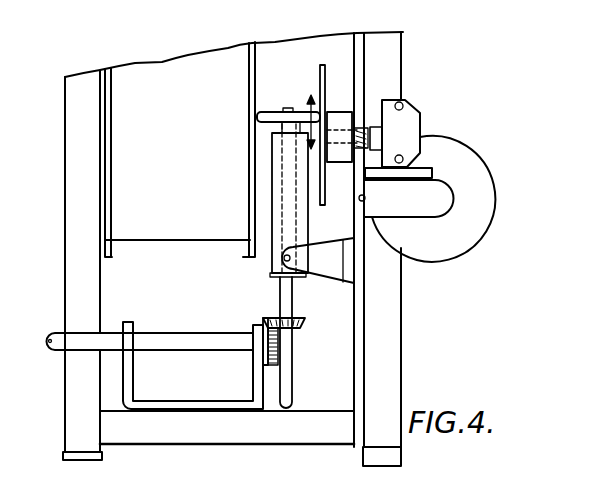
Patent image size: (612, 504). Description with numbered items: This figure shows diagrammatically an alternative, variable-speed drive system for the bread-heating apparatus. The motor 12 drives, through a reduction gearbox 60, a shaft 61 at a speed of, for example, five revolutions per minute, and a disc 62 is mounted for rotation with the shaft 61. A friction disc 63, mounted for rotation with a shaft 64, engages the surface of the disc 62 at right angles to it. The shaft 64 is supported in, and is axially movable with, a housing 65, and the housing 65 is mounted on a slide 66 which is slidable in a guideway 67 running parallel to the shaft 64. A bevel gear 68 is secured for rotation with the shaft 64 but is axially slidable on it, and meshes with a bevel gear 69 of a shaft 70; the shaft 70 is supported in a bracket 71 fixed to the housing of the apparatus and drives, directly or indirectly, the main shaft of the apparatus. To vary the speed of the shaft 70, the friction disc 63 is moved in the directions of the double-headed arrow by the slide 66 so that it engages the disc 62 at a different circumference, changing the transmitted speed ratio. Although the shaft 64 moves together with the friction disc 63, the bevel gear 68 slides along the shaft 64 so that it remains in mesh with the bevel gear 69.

The motor 12 is at (448, 152).
The reduction gearbox 60 is at (407, 128).
The shaft 61 is at (367, 128).
The disc 62 is at (321, 86).
The friction disc 63 is at (257, 116).
The shaft 64 is at (292, 300).
The housing 65 is at (272, 180).
The slide 66 is at (330, 267).
The guideway 67 is at (360, 267).
The bevel gear 68 is at (300, 327).
The bevel gear 69 is at (275, 360).
The shaft 70 is at (193, 341).
The bracket 71 is at (134, 400).